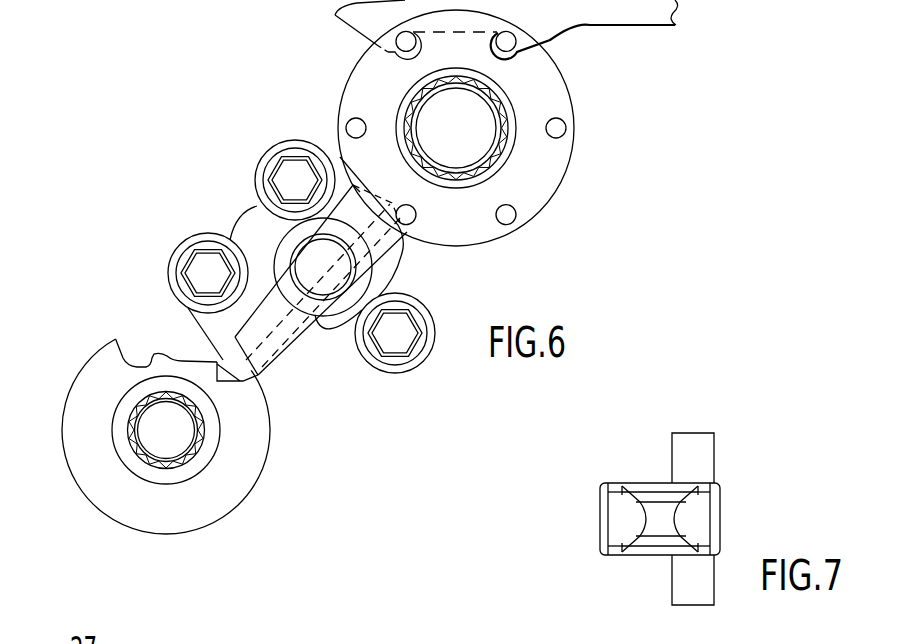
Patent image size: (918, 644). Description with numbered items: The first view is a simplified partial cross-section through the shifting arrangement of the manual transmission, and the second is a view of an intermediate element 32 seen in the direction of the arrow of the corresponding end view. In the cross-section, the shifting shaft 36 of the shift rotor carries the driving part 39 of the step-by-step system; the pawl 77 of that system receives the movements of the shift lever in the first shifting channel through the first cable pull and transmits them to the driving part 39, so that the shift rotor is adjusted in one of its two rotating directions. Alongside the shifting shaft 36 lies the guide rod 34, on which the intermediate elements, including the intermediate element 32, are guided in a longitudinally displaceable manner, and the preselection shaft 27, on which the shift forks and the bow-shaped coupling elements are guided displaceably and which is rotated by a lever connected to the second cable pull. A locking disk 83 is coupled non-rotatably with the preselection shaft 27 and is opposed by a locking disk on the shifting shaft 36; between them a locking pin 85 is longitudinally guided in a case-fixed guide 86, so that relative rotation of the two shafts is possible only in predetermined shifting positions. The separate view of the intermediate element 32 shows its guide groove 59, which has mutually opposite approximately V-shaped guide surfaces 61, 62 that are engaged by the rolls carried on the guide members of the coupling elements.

In FIG. 6, the preselection shaft 27 is at (147, 445).
In FIG. 7, the intermediate element 32 is at (722, 426).
In FIG. 6, the guide rod 34 is at (343, 300).
In FIG. 6, the shifting shaft 36 is at (481, 118).
In FIG. 6, the driving part 39 is at (550, 177).
In FIG. 7, the guide groove 59 is at (624, 563).
In FIG. 7, the guide surface 61 is at (692, 497).
In FIG. 7, the guide surface 62 is at (687, 545).
In FIG. 6, the pawl 77 is at (627, 10).
In FIG. 6, the locking disk 83 is at (250, 462).
In FIG. 6, the locking pin 85 is at (217, 362).
In FIG. 6, the case-fixed guide 86 is at (228, 225).